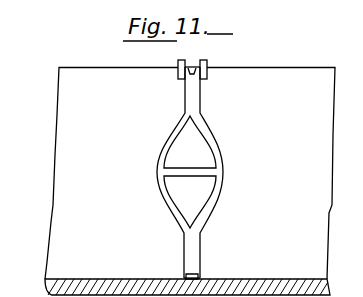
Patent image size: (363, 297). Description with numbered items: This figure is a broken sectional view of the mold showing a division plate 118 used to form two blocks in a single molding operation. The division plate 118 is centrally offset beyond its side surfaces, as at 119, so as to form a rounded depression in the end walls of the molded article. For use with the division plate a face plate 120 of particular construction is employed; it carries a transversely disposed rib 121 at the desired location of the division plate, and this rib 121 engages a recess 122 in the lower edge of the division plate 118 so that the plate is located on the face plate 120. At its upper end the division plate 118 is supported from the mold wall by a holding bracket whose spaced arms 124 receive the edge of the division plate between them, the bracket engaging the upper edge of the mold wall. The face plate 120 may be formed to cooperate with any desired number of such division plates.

The division plate 118 is at (205, 125).
The central offset of division plate 119 is at (223, 158).
The face plate 120 is at (190, 182).
The transversely disposed rib 121 is at (200, 277).
The recess 122 is at (192, 69).
The spaced arms 124 is at (208, 63).